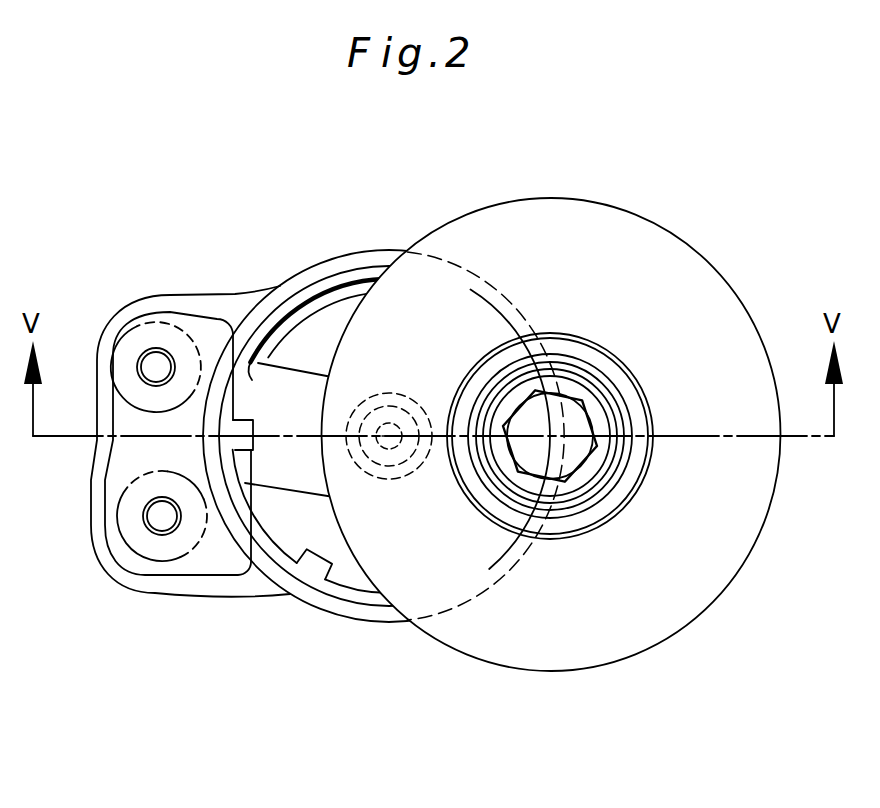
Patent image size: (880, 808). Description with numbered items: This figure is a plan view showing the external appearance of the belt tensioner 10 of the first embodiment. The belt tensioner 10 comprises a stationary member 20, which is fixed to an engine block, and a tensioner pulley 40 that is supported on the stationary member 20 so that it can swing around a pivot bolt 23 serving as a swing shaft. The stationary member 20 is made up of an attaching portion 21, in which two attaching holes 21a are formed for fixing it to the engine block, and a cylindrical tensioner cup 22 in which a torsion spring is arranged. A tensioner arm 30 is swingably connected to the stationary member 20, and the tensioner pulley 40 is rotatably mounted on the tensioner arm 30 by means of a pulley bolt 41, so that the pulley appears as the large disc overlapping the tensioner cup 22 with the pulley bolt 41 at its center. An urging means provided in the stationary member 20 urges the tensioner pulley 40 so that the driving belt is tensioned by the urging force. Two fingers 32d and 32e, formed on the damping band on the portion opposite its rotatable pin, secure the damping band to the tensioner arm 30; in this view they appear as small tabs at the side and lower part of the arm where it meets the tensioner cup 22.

The belt tensioner 10 is at (266, 252).
The stationary member 20 is at (260, 597).
The attaching portion 21 is at (113, 567).
The attaching holes 21a is at (154, 357).
The tensioner cup 22 is at (368, 618).
The pivot bolt 23 is at (400, 406).
The tensioner arm 30 is at (330, 573).
The finger 32d is at (240, 443).
The finger 32e is at (308, 560).
The tensioner pulley 40 is at (577, 665).
The pulley bolt 41 is at (575, 462).